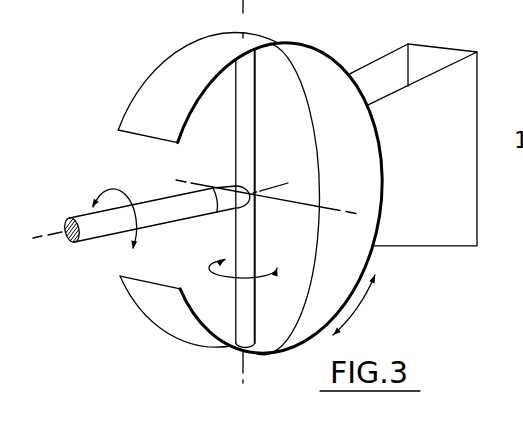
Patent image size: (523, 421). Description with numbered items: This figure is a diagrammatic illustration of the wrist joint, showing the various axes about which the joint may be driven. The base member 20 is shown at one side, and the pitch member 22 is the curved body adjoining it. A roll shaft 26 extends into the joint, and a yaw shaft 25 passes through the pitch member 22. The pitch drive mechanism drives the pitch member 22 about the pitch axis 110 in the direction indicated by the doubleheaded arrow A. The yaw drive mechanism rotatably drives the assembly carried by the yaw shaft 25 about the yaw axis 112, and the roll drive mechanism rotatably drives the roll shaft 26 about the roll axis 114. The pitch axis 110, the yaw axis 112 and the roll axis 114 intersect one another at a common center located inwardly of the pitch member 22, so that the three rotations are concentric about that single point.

The base member 20 is at (389, 76).
The pitch member 22 is at (181, 73).
The yaw shaft 25 is at (244, 153).
The roll shaft 26 is at (149, 201).
The pitch axis 110 is at (305, 203).
The yaw axis 112 is at (175, 340).
The roll axis 114 is at (34, 238).
The doubleheaded arrow A is at (358, 305).